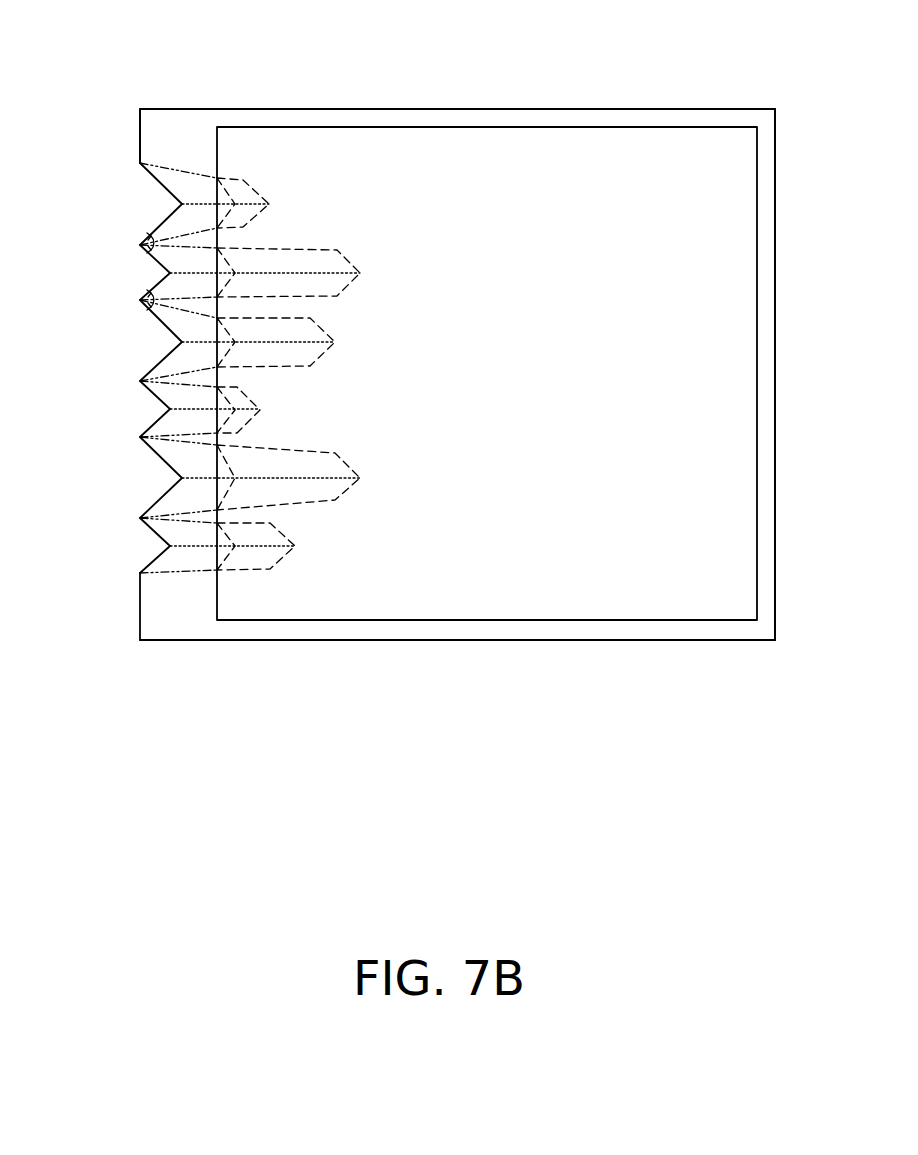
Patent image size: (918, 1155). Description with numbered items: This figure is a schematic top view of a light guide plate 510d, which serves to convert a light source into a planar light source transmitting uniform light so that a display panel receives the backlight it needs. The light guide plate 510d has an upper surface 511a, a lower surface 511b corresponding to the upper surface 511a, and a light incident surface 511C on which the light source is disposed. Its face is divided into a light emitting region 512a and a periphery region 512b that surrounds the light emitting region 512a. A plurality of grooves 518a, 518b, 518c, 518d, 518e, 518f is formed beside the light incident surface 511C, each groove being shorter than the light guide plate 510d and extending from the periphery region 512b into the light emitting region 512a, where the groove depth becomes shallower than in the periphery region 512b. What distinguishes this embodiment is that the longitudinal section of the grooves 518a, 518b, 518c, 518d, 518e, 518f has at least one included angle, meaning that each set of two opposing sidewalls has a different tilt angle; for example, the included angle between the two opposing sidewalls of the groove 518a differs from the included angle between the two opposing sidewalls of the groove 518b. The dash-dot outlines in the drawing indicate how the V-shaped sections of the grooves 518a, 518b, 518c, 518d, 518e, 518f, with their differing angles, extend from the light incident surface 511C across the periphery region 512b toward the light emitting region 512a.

The light guide plate 510d is at (690, 705).
The upper surface 511a is at (712, 632).
The lower surface 511b is at (592, 640).
The light incident surface 511C is at (140, 150).
The light emitting region 512a is at (438, 152).
The periphery region 512b is at (175, 133).
The groove 518a is at (197, 219).
The groove 518b is at (210, 288).
The groove 518c is at (199, 356).
The groove 518d is at (186, 422).
The groove 518e is at (199, 491).
The groove 518f is at (186, 559).